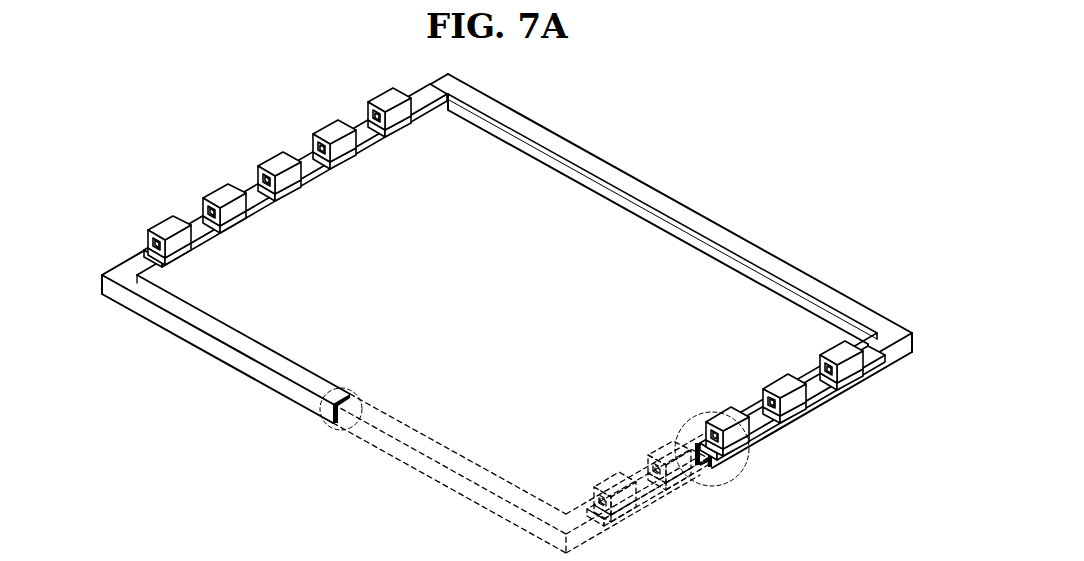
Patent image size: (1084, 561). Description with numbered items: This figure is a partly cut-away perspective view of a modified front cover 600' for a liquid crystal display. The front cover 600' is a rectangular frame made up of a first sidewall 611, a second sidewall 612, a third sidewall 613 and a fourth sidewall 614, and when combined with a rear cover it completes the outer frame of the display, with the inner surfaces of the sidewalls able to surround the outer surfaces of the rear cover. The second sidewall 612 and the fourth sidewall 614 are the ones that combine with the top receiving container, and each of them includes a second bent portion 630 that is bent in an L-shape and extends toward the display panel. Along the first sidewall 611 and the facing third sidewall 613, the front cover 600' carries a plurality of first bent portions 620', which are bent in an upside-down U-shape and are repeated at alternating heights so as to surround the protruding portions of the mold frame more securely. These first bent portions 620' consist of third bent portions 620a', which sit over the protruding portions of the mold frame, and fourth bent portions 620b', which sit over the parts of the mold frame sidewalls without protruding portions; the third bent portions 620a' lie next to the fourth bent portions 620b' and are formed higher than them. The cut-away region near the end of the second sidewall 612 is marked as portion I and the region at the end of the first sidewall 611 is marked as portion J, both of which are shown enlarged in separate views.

The front cover 600' is at (502, 309).
The first sidewall 611 is at (812, 410).
The second sidewall 612 is at (220, 351).
The third sidewall 613 is at (137, 262).
The fourth sidewall 614 is at (673, 232).
The second bent portion 630 is at (260, 352).
The first bent portion 620' is at (690, 433).
The third bent portion 620a' is at (714, 431).
The fourth bent portion 620b' is at (725, 436).
The portion I is at (349, 392).
The portion J is at (742, 462).